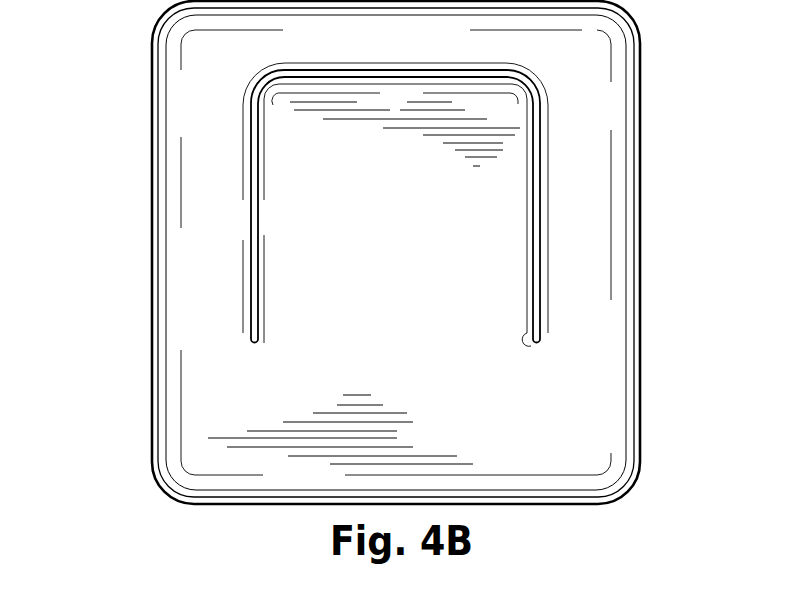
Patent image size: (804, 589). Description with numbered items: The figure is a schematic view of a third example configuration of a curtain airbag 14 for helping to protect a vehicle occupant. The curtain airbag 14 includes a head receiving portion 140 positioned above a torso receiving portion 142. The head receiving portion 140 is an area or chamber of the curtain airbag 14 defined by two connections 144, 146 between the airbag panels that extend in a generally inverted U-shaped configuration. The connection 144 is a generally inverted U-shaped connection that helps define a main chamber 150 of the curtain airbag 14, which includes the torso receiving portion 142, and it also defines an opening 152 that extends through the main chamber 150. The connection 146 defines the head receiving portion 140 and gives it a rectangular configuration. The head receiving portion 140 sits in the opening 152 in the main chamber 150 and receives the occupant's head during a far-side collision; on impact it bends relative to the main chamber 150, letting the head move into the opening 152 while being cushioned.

The curtain airbag 14 is at (122, 18).
The head receiving portion 140 is at (442, 157).
The torso receiving portion 142 is at (420, 445).
The connection 144 is at (352, 52).
The connection 146 is at (352, 52).
The main chamber 150 is at (593, 225).
The opening 152 is at (308, 235).